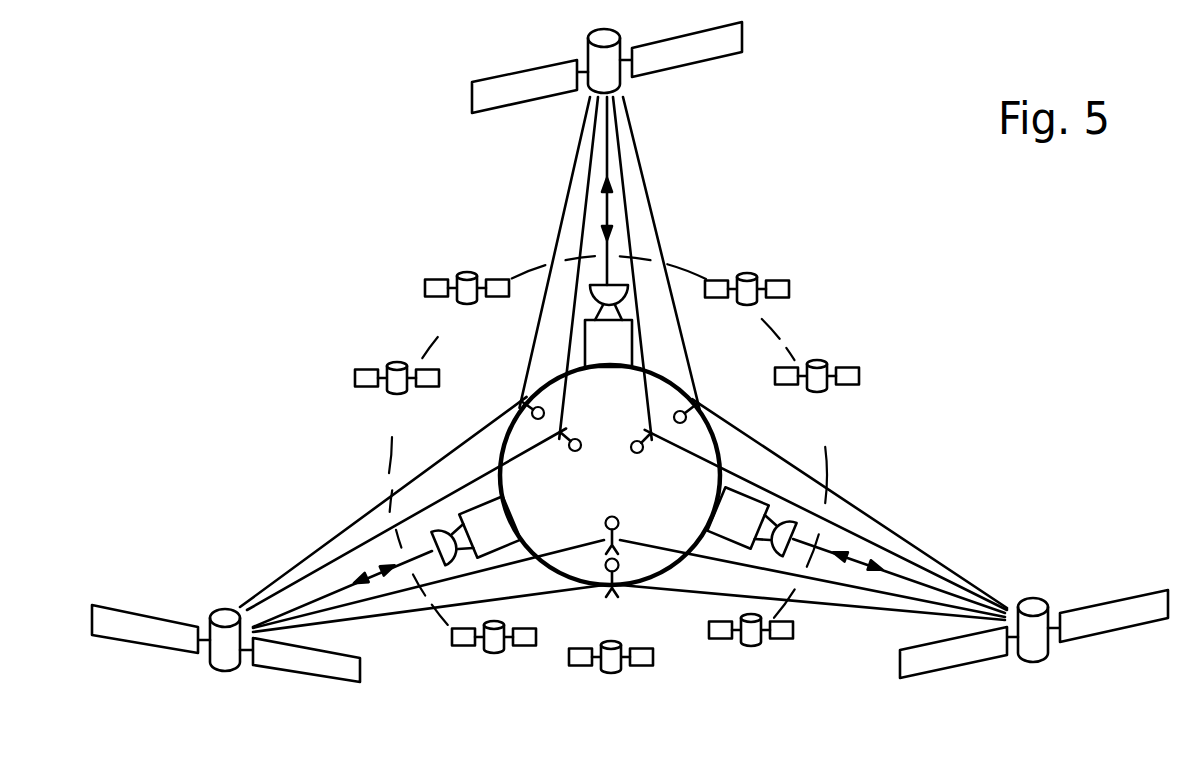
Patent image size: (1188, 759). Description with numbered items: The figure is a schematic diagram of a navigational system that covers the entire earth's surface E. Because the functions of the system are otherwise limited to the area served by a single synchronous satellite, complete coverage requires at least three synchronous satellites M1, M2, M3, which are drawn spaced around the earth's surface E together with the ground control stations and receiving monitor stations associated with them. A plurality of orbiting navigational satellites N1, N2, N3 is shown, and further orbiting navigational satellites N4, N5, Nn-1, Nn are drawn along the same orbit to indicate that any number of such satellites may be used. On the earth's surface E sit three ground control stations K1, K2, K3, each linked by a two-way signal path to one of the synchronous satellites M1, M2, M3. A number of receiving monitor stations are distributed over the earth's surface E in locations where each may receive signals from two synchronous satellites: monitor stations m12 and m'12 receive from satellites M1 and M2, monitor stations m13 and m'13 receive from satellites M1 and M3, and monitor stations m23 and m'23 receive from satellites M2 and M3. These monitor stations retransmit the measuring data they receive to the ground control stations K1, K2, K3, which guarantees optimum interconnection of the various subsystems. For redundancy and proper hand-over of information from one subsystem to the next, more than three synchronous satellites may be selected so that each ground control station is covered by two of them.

The synchronous satellite M1 is at (607, 62).
The synchronous satellite M2 is at (1034, 618).
The synchronous satellite M3 is at (226, 621).
The orbiting navigational satellite N1 is at (747, 310).
The orbiting navigational satellite N2 is at (817, 399).
The orbiting navigational satellite N3 is at (751, 654).
The auxiliary satellite 4 N4 is at (611, 681).
The auxiliary satellite 5 N5 is at (494, 660).
The auxiliary satellite n Nn is at (467, 307).
The auxiliary satellite n-1 Nn-1 is at (397, 401).
The earth's surface E is at (610, 475).
The ground control station K1 is at (608, 232).
The ground control station K2 is at (856, 550).
The ground control station K3 is at (387, 561).
The receiving monitor station m13 is at (507, 398).
The receiving monitor station m12 is at (717, 400).
The receiving monitor station m'13 is at (574, 461).
The receiving monitor station m'12 is at (656, 462).
The receiving monitor station m'23 is at (615, 520).
The receiving monitor station m23 is at (623, 597).